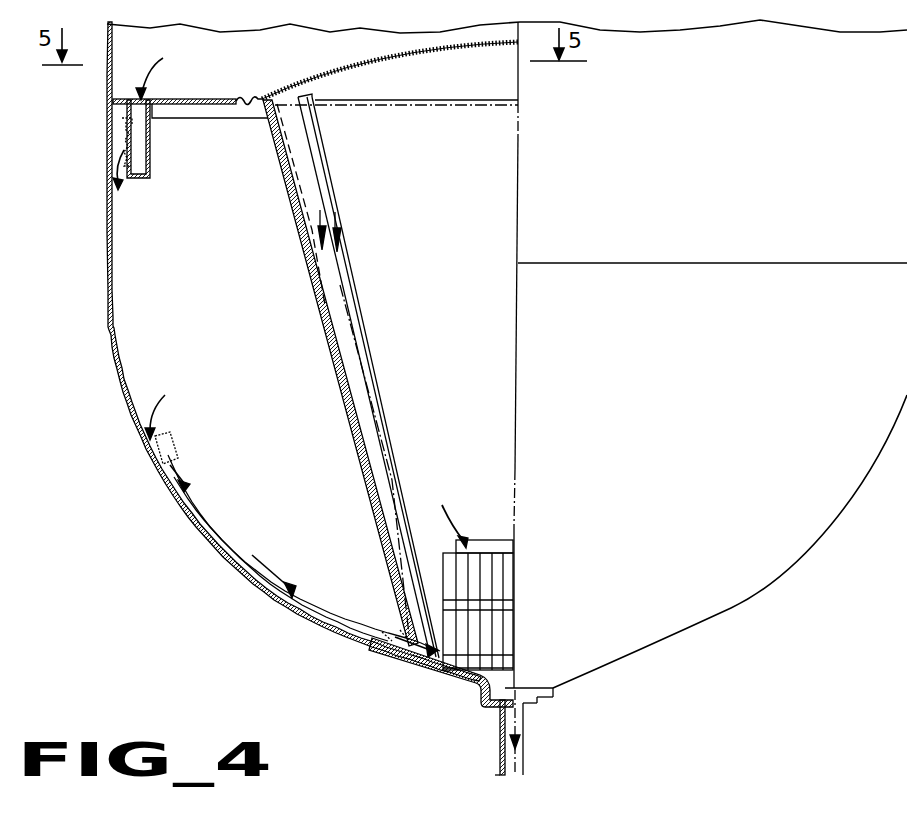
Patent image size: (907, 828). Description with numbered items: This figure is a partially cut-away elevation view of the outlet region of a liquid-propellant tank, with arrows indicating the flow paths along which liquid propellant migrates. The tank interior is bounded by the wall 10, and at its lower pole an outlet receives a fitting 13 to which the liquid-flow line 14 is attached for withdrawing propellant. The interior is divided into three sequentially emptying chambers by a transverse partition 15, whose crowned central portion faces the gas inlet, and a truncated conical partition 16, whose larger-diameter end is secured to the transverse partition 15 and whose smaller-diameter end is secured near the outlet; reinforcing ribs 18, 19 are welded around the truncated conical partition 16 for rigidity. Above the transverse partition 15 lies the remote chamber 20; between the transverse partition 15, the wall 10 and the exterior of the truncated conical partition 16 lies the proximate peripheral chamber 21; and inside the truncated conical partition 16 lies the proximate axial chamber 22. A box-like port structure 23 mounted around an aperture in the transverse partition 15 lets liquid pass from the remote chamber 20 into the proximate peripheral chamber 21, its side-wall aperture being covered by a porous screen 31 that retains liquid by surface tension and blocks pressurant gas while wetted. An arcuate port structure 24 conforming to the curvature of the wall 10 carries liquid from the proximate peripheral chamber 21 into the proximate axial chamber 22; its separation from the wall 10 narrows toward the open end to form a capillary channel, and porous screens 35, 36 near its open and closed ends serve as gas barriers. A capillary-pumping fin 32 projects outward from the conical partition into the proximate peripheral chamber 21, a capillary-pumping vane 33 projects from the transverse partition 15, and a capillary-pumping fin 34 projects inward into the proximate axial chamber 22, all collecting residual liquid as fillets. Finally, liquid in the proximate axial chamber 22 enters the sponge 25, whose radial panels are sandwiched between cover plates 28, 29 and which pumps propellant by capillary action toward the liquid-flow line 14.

The wall 10 is at (109, 316).
The fitting 13 is at (536, 698).
The liquid-flow line 14 is at (524, 740).
The transverse partition 15 is at (430, 57).
The truncated conical partition 16 is at (330, 356).
The reinforcing rib 18 is at (357, 452).
The reinforcing rib 19 is at (298, 240).
The remote chamber 20 is at (243, 73).
The proximate peripheral chamber 21 is at (225, 333).
The proximate axial chamber 22 is at (453, 293).
The port structure 23 is at (152, 156).
The port structure 24 is at (220, 514).
The sponge 25 is at (483, 530).
The cover plate 28 is at (456, 532).
The cover plate 29 is at (450, 682).
The porous screen 31 is at (124, 134).
The capillary-pumping fin 32 is at (382, 574).
The capillary-pumping vane 33 is at (205, 118).
The capillary-pumping fin 34 is at (333, 186).
The porous screen 35 is at (370, 642).
The porous screen 36 is at (165, 474).